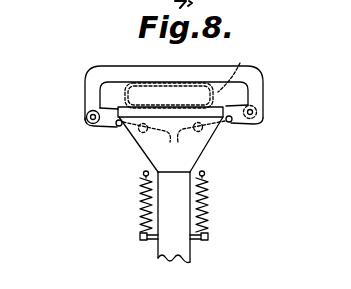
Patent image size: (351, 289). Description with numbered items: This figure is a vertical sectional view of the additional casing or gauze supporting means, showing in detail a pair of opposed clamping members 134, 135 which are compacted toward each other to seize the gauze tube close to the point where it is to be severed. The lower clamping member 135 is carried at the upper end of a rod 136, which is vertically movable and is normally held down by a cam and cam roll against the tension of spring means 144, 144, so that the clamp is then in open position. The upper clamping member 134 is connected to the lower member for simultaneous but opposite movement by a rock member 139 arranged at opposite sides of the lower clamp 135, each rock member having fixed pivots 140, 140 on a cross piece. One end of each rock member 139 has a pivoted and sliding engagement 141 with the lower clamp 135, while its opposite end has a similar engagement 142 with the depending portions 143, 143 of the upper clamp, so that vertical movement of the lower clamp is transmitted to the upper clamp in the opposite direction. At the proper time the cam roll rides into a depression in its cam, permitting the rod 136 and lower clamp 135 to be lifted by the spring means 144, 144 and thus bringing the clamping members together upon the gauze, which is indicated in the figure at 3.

The bag 3 is at (233, 69).
The upper clamping member 134 is at (202, 63).
The lower clamping member 135 is at (157, 118).
The rod 136 is at (167, 245).
The rock member 139 is at (108, 125).
The fixed pivot 140 is at (119, 126).
The pivoted and sliding engagement 141 is at (208, 121).
The pivoted and sliding engagement 142 is at (87, 117).
The depending portion 143 is at (86, 92).
The spring means 144 is at (141, 196).